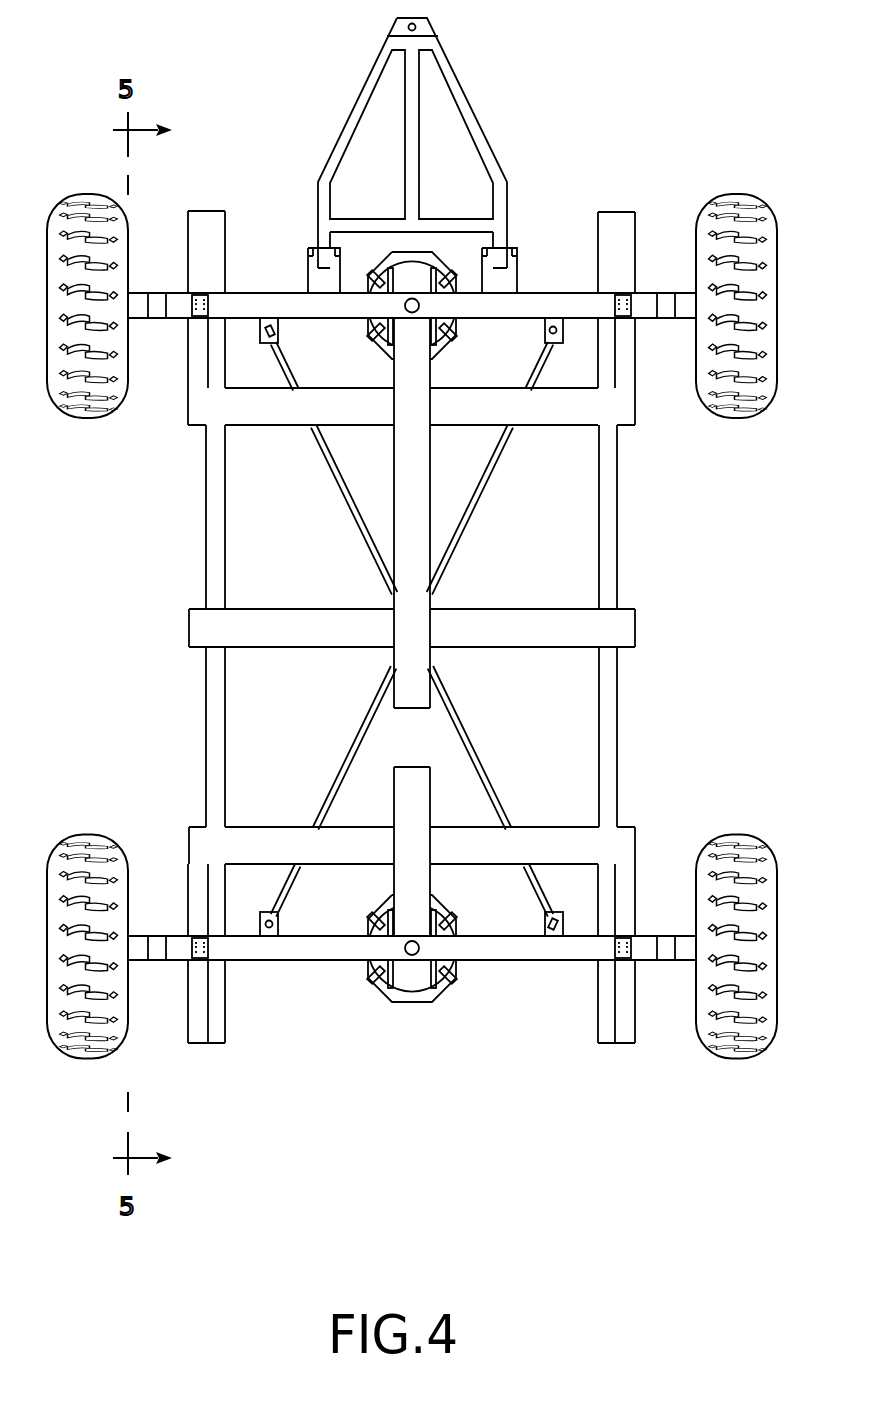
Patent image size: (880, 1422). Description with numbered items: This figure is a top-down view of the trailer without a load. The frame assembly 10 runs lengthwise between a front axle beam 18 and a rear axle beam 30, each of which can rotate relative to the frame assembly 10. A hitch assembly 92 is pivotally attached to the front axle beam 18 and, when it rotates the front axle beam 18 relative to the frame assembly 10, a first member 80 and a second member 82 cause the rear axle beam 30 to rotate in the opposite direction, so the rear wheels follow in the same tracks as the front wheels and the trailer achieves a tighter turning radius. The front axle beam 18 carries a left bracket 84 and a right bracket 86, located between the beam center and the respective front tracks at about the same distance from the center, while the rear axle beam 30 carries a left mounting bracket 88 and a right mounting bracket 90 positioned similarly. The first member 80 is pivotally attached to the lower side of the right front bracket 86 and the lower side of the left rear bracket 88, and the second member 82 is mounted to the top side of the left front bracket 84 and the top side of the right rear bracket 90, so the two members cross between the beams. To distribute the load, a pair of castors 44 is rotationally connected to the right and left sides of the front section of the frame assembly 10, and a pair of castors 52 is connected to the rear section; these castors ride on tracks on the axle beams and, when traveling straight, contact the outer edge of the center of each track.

The frame assembly 10 is at (650, 547).
The front axle beam 18 is at (526, 292).
The rear axle beam 30 is at (483, 960).
The castors 44 is at (200, 293).
The castors 52 is at (200, 960).
The first member 80 is at (483, 490).
The second member 82 is at (335, 477).
The left bracket 84 is at (277, 318).
The right bracket 86 is at (553, 318).
The left mounting bracket 88 is at (270, 936).
The right mounting bracket 90 is at (553, 936).
The hitch assembly 92 is at (480, 80).